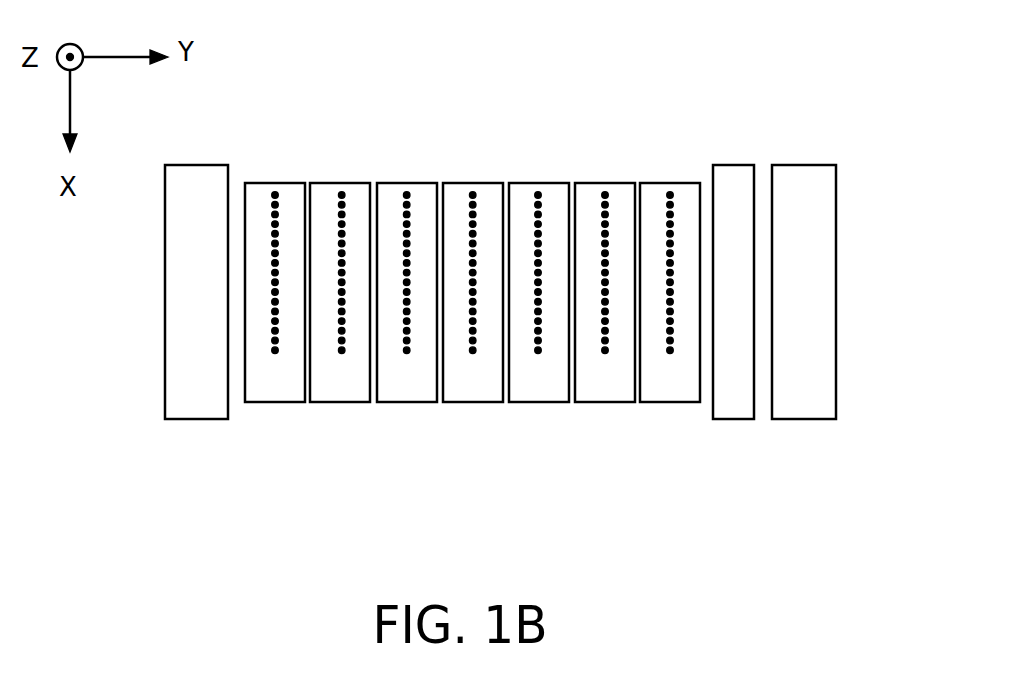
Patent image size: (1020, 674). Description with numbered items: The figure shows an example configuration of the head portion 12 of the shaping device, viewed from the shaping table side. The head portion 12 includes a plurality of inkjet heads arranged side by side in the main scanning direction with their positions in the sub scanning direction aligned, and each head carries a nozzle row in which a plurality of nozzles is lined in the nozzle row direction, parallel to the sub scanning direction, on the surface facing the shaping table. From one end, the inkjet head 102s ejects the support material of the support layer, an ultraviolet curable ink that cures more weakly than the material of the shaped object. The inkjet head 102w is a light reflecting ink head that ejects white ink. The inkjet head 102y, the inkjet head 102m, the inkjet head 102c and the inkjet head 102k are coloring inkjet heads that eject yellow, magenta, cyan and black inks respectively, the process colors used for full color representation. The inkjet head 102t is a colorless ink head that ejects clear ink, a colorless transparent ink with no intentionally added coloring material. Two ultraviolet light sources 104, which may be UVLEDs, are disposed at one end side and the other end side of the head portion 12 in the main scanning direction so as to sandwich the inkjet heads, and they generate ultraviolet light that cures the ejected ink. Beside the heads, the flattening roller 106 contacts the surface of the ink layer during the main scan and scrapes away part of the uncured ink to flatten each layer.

The head portion 12 is at (900, 65).
The inkjet head 102s is at (285, 402).
The inkjet head 102w is at (340, 402).
The inkjet head 102y is at (418, 402).
The inkjet head 102m is at (473, 402).
The inkjet head 102c is at (548, 402).
The inkjet head 102k is at (603, 402).
The inkjet head 102t is at (680, 402).
The ultraviolet light source 104 is at (193, 402).
The flattening roller 106 is at (735, 165).